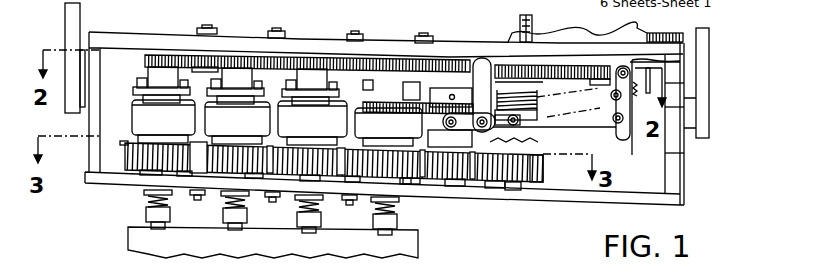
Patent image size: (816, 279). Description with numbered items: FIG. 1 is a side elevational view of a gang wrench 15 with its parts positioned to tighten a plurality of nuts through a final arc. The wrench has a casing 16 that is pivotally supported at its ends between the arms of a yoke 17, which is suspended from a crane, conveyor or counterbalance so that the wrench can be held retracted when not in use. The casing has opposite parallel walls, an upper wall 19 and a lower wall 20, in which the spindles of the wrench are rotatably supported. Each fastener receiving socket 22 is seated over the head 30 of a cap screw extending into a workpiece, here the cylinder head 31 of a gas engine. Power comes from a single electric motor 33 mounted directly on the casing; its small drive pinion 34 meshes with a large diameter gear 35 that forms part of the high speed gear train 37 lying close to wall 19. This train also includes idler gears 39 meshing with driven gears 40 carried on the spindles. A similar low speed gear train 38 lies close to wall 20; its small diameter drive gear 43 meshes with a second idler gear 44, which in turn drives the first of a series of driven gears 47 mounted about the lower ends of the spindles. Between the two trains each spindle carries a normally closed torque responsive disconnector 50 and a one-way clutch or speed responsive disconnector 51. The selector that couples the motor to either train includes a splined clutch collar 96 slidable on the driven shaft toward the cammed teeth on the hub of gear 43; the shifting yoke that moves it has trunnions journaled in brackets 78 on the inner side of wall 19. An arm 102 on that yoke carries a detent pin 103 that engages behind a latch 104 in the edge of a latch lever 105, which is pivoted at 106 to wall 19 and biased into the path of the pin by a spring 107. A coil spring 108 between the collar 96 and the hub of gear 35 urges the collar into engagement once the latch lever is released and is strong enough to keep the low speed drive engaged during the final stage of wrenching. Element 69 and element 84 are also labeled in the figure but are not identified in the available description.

The gang wrench 15 is at (152, 31).
The casing 16 is at (85, 158).
The yoke 17 is at (65, 17).
The upper wall 19 is at (488, 55).
The lower wall 20 is at (580, 200).
The fastener receiving socket 22 is at (222, 213).
The head 30 is at (147, 215).
The cylinder head 31 is at (418, 243).
The electric motor 33 is at (520, 17).
The drive pinion 34 is at (605, 70).
The large diameter gear 35 is at (560, 70).
The high speed gear train 37 is at (138, 58).
The low speed gear train 38 is at (122, 157).
The idler gears 39 is at (216, 54).
The driven gears 40 is at (170, 52).
The small diameter drive gear 43 is at (513, 190).
The second idler gear 44 is at (470, 186).
The driven gears 47 is at (407, 185).
The torque responsive disconnector 50 is at (128, 88).
The speed responsive disconnector 51 is at (182, 123).
The pinion rack 69 is at (418, 96).
The brackets 78 is at (477, 58).
The pawl block 84 is at (442, 88).
The clutch collar 96 is at (545, 158).
The arm 102 is at (538, 143).
The detent pin 103 is at (627, 146).
The latch 104 is at (690, 108).
The latch lever 105 is at (677, 153).
The pivot 106 is at (685, 60).
The spring 107 is at (690, 83).
The coil spring 108 is at (547, 106).